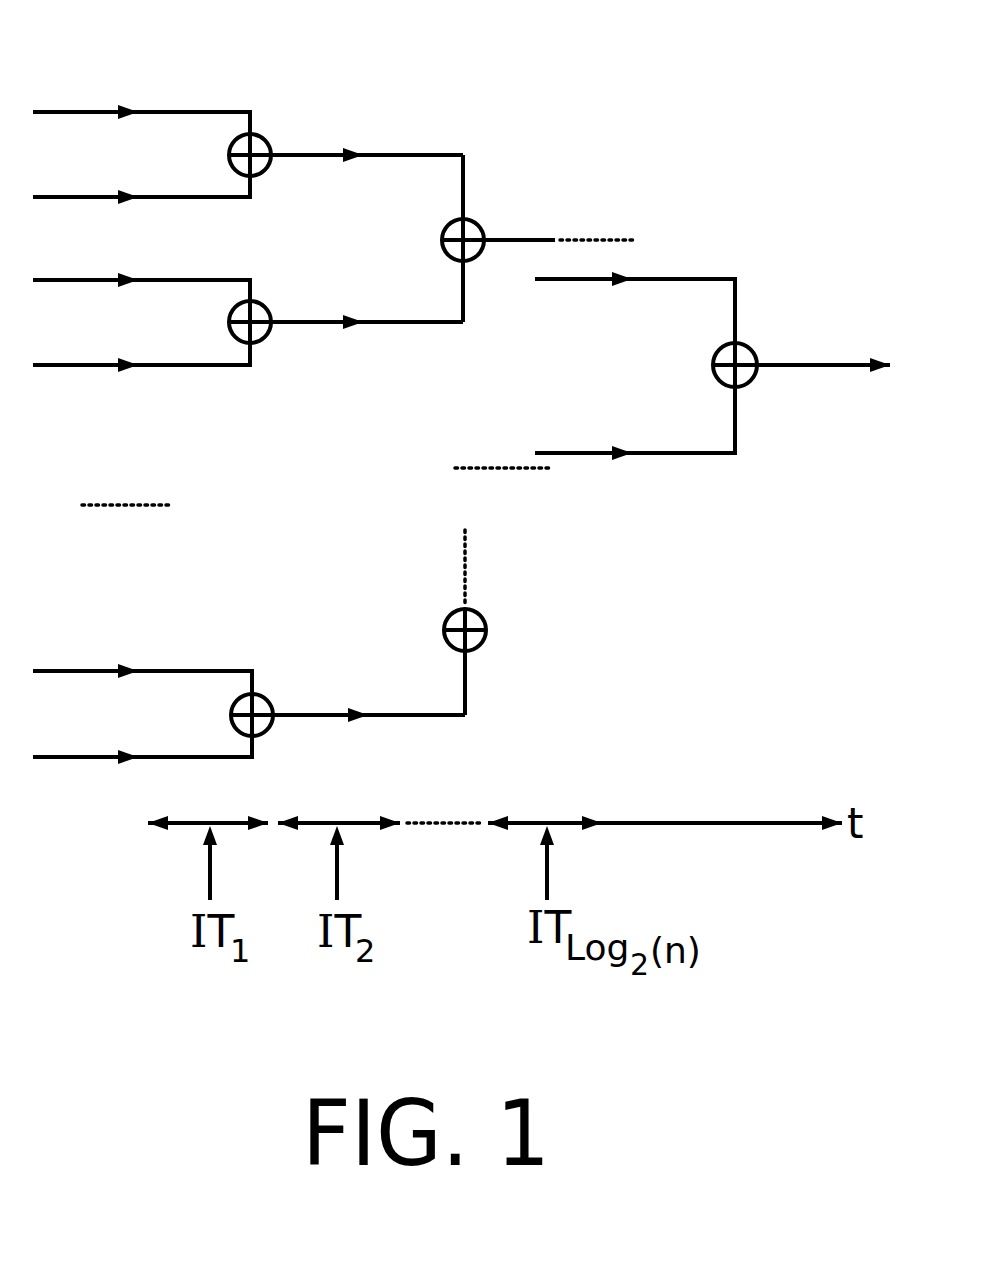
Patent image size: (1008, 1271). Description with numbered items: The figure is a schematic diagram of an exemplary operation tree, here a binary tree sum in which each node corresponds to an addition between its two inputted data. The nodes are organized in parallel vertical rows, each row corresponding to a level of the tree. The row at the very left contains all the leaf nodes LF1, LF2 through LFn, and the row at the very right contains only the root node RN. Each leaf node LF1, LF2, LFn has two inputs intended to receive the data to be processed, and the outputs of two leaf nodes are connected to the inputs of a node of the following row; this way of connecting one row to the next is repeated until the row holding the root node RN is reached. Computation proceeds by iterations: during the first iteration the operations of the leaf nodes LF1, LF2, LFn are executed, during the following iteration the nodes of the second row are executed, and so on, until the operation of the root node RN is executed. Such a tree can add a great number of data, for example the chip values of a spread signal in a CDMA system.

The leaf node LF1 is at (268, 138).
The leaf node LF2 is at (268, 305).
The leaf node LFn is at (270, 697).
The root node RN is at (749, 382).